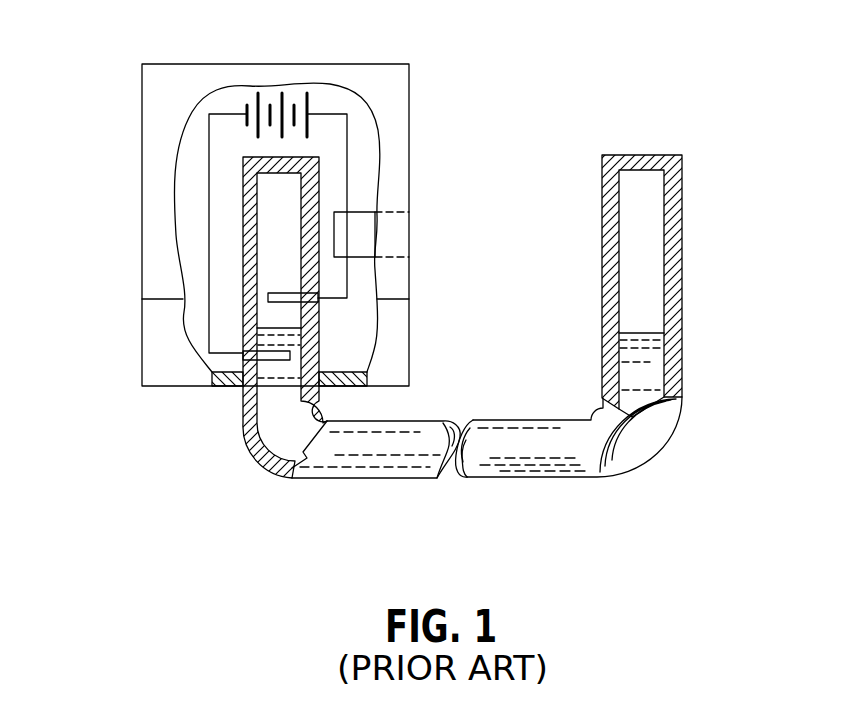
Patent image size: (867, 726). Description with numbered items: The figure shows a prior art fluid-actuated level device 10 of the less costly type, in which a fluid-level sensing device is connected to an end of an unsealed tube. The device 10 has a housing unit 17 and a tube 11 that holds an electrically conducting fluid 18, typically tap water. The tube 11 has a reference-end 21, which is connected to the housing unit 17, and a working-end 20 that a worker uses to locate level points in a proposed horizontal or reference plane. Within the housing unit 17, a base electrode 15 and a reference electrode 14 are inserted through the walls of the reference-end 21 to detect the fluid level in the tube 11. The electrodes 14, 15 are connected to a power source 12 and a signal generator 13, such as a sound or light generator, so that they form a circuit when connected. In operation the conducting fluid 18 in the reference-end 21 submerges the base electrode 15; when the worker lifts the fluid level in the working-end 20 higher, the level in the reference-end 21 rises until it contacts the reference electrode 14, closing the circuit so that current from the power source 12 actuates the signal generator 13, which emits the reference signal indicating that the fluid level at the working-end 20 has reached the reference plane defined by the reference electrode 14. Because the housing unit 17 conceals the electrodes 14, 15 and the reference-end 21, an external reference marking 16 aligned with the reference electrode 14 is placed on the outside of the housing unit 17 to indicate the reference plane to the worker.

The fluid-actuated level device 10 is at (516, 127).
The tube 11 is at (502, 478).
The power source 12 is at (310, 100).
The signal generator 13 is at (412, 237).
The reference electrode 14 is at (290, 292).
The base electrode 15 is at (272, 362).
The external reference marking 16 is at (395, 299).
The housing unit 17 is at (410, 93).
The electrically conducting fluid 18 is at (647, 380).
The working-end 20 is at (647, 235).
The reference-end 21 is at (268, 190).